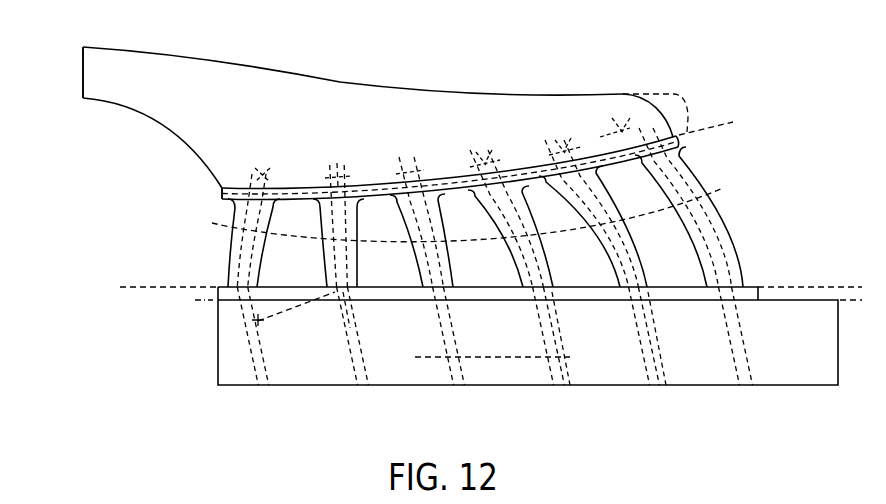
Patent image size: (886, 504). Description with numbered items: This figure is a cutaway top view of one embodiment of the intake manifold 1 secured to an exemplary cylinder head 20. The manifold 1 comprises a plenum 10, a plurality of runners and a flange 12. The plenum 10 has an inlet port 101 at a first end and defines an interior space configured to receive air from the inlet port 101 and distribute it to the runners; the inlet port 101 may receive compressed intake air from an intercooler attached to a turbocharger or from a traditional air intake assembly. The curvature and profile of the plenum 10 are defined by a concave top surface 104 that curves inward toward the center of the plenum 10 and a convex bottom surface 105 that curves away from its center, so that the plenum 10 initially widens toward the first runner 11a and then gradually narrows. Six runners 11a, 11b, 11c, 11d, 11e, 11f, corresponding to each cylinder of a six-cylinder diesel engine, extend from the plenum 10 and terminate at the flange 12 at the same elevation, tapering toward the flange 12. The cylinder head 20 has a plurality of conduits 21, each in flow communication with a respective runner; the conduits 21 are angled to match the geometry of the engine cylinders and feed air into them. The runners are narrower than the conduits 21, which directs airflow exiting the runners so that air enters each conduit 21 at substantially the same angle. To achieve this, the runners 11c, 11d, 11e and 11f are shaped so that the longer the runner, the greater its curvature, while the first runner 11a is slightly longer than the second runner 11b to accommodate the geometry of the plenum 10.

The intake manifold 1 is at (148, 148).
The plenum 10 is at (235, 83).
The inlet port 101 is at (78, 60).
The concave top surface 104 is at (473, 95).
The convex bottom surface 105 is at (222, 191).
The first runner 11a is at (238, 248).
The second runner 11b is at (330, 248).
The third runner 11c is at (420, 248).
The fourth runner 11d is at (510, 248).
The fifth runner 11e is at (610, 248).
The sixth runner 11f is at (710, 248).
The flange 12 is at (692, 284).
The cylinder head 20 is at (235, 380).
The conduits 21 is at (257, 388).